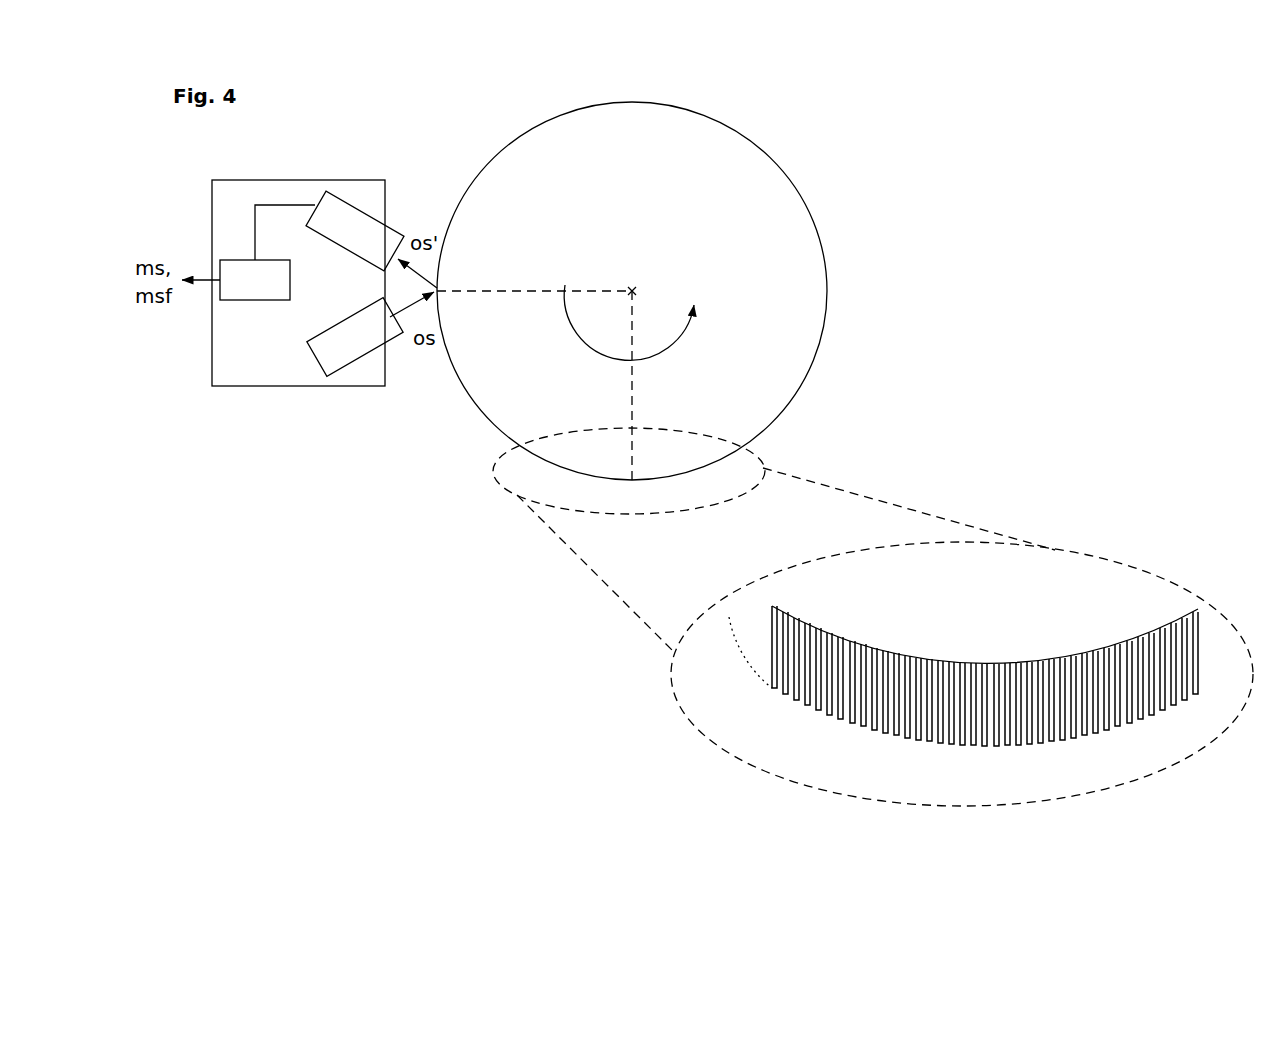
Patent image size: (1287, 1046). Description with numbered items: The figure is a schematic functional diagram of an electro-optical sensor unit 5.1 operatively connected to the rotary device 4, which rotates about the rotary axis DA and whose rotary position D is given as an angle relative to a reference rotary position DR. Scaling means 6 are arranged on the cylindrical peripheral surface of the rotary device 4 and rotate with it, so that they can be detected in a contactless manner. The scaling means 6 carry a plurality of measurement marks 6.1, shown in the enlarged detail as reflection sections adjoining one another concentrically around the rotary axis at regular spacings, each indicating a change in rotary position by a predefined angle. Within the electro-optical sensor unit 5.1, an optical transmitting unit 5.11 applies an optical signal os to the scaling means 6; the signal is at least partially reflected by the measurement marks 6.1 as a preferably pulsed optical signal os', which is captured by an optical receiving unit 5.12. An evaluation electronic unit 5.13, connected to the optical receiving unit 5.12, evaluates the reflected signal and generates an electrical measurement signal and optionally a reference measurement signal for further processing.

The rotary device 4 is at (737, 158).
The electro-optical sensor unit 5.1 is at (277, 358).
The optical transmitting unit 5.11 is at (347, 345).
The optical receiving unit 5.12 is at (348, 225).
The evaluation electronic unit 5.13 is at (245, 280).
The scaling means 6 is at (830, 350).
The measurement marks 6.1 is at (1022, 770).